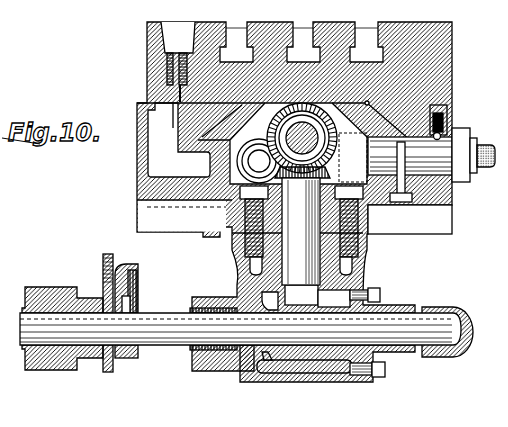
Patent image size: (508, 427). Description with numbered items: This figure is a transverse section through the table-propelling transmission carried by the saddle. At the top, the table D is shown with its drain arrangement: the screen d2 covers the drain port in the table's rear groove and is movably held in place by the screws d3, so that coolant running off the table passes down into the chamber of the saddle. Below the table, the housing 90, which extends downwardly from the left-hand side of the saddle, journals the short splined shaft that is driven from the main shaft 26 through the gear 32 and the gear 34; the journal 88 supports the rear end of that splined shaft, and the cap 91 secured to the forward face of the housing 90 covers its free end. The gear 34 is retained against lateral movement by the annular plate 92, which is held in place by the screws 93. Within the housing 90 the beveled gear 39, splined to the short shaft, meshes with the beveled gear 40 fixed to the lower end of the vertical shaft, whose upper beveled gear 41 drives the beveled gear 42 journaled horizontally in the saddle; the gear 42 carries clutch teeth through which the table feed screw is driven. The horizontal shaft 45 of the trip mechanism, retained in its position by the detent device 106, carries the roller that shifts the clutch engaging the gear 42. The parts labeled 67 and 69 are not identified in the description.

The table D is at (443, 46).
The screen d2 is at (170, 52).
The screws d3 is at (177, 78).
The detent device 106 is at (457, 117).
The horizontal shaft 45 is at (431, 165).
The beveled gear 40 is at (327, 302).
The beveled gear 42 is at (298, 143).
The beveled gear 39 is at (305, 133).
The beveled gear 41 is at (296, 178).
The gear 32 is at (107, 254).
The collar 67 is at (125, 264).
The screws 93 is at (137, 277).
The annular plate 92 is at (133, 300).
The journal 88 is at (43, 287).
The shaft 26 is at (157, 326).
The housing 90 is at (223, 297).
The gear 34 is at (111, 367).
The key 69 is at (192, 351).
The cap 91 is at (397, 308).